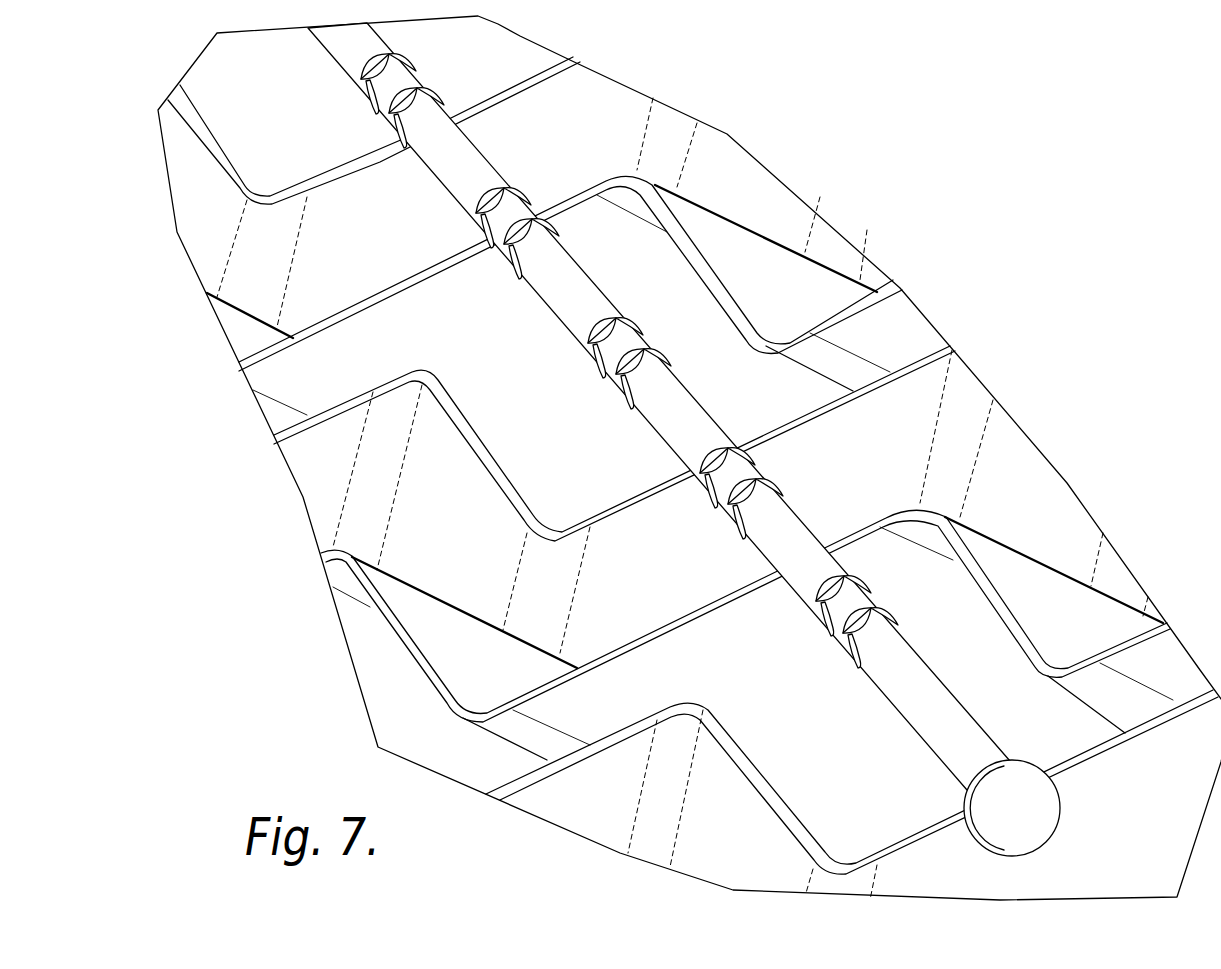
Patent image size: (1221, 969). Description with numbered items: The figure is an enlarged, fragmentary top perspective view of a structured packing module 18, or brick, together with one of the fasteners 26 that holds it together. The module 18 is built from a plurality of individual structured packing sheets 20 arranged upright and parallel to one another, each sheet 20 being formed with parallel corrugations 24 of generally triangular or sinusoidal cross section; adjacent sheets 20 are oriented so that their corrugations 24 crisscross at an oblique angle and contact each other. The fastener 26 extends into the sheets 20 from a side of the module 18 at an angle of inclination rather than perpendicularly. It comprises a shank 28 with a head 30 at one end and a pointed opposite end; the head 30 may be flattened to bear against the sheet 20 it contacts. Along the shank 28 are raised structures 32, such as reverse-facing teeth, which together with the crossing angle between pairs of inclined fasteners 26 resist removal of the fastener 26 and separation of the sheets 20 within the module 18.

The structured packing module 18 is at (731, 133).
The structured packing sheet 20 is at (930, 377).
The corrugations 24 is at (728, 234).
The fastener 26 is at (600, 282).
The shank 28 is at (792, 522).
The head 30 is at (1038, 807).
The raised structures 32 is at (862, 592).